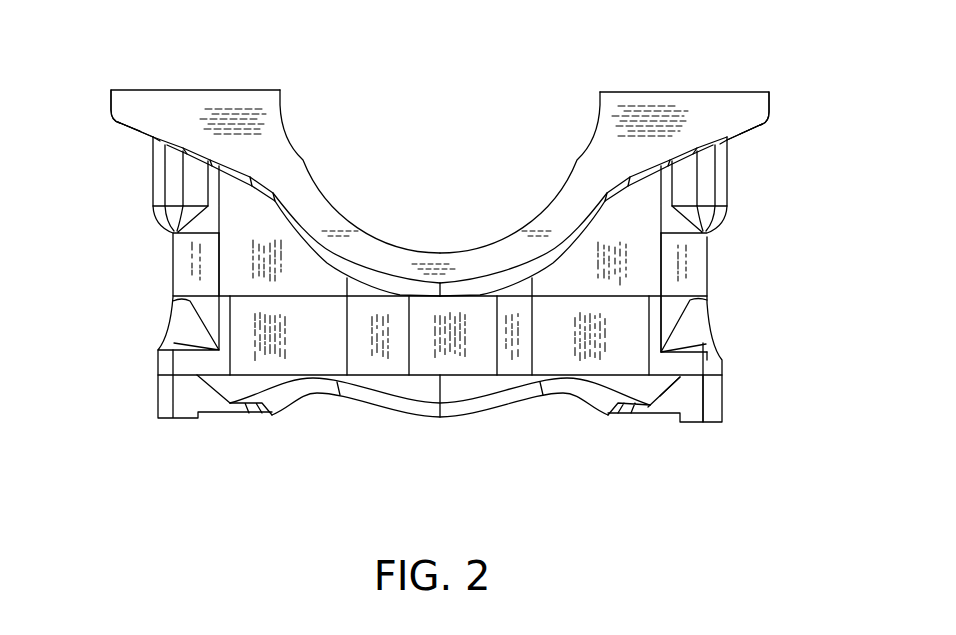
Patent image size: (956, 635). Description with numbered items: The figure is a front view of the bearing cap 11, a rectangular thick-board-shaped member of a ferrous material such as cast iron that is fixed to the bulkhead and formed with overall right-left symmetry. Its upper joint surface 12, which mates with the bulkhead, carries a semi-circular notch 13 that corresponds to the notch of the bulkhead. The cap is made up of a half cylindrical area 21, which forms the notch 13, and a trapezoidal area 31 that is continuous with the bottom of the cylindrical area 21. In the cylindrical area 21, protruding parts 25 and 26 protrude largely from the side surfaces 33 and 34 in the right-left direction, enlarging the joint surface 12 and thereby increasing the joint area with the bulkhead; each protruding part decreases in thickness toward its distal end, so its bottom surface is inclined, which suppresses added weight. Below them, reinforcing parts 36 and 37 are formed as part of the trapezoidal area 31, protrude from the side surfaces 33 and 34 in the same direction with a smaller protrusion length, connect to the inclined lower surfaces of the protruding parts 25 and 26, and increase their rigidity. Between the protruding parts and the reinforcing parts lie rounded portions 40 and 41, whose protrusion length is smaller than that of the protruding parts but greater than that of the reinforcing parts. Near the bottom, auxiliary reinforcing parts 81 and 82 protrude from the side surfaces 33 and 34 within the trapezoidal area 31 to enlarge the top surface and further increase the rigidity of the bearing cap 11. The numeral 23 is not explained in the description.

The bearing cap 11 is at (392, 425).
The joint surface 12 is at (615, 92).
The semi-circular notch 13 is at (583, 160).
The half cylindrical area 21 is at (305, 158).
The left flange 23 is at (197, 112).
The protruding part 25 is at (127, 105).
The protruding part 26 is at (750, 107).
The trapezoidal area 31 is at (168, 310).
The side surface 33 is at (170, 263).
The side surface 34 is at (707, 265).
The reinforcing part 36 is at (170, 187).
The reinforcing part 37 is at (707, 188).
The rounded portion 40 is at (727, 140).
The rounded portion 41 is at (152, 137).
The auxiliary reinforcing part 81 is at (185, 387).
The auxiliary reinforcing part 82 is at (693, 388).